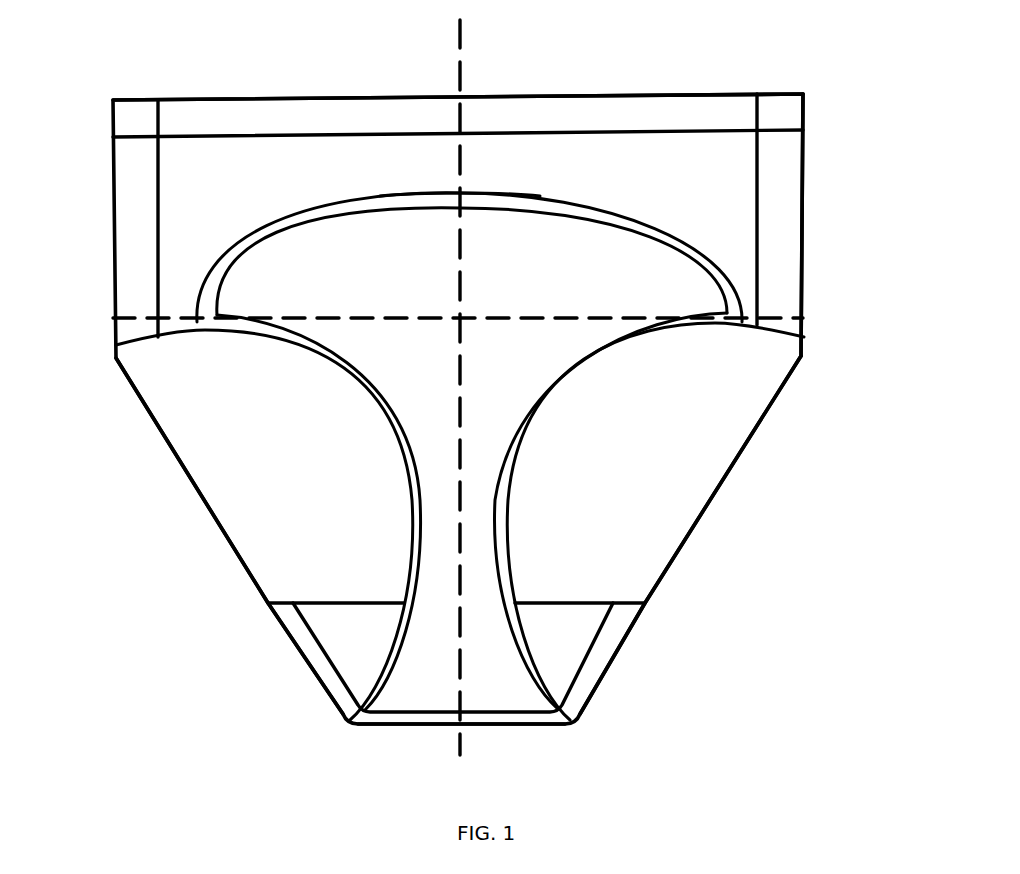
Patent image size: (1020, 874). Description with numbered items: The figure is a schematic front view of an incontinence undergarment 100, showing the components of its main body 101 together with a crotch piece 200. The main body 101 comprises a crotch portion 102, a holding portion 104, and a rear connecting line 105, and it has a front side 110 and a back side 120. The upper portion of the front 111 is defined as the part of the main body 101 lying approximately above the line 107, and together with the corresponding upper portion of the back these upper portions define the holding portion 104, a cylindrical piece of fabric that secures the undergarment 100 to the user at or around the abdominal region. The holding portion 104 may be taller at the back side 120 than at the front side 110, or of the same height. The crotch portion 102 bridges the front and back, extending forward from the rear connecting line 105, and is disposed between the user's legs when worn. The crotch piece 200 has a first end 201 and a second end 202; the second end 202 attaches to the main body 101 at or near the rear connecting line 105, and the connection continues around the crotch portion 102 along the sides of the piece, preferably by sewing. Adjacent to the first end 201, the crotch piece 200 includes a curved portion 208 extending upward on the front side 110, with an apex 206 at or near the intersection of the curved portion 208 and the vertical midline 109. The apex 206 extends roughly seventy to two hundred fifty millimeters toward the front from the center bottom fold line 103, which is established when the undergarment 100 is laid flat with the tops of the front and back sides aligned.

The undergarment 100 is at (127, 51).
The main body 101 is at (182, 170).
The crotch portion 102 is at (498, 640).
The center bottom fold line 103 is at (503, 727).
The holding portion 104 is at (836, 190).
The rear connecting line 105 is at (350, 603).
The line 107 is at (513, 317).
The vertical midline 109 is at (458, 49).
The front side 110 is at (718, 202).
The upper portion of the front 111 is at (620, 110).
The back side 120 is at (223, 368).
The crotch piece 200 is at (480, 587).
The first end 201 is at (443, 202).
The second end 202 is at (588, 603).
The apex 206 is at (463, 193).
The curved portion 208 is at (300, 218).